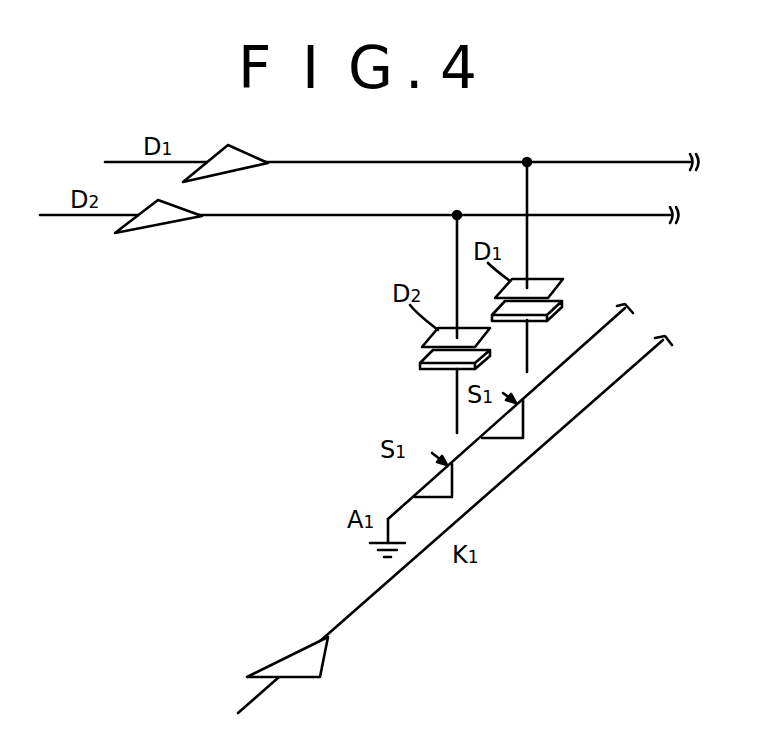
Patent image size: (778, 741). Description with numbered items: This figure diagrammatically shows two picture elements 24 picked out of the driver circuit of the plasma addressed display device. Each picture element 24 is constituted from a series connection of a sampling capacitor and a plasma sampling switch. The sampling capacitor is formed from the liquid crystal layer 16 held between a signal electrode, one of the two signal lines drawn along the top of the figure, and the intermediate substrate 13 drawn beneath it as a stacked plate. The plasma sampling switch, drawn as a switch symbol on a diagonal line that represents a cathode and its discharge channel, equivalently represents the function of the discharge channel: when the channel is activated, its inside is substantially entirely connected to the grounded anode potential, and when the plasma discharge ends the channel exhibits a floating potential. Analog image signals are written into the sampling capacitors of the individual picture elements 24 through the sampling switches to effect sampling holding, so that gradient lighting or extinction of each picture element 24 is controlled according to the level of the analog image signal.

The intermediate substrate 13 is at (563, 306).
The liquid crystal layer 16 is at (566, 282).
The picture element 24 is at (507, 322).